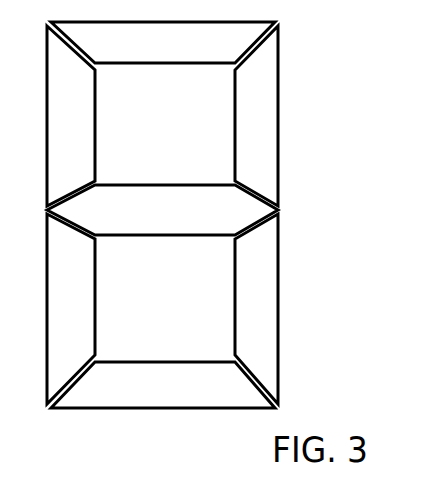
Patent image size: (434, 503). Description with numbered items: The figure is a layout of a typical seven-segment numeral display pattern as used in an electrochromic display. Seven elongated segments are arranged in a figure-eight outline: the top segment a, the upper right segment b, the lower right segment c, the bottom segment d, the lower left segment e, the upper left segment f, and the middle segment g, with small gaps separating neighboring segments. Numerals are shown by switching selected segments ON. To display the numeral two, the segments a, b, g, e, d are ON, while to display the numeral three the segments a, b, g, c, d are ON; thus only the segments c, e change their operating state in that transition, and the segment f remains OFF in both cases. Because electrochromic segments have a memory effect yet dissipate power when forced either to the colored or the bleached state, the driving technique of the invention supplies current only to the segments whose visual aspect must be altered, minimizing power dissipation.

The segment a is at (163, 42).
The segment b is at (256, 116).
The segment c is at (256, 309).
The segment d is at (163, 385).
The segment e is at (71, 309).
The segment f is at (71, 116).
The segment g is at (162, 210).